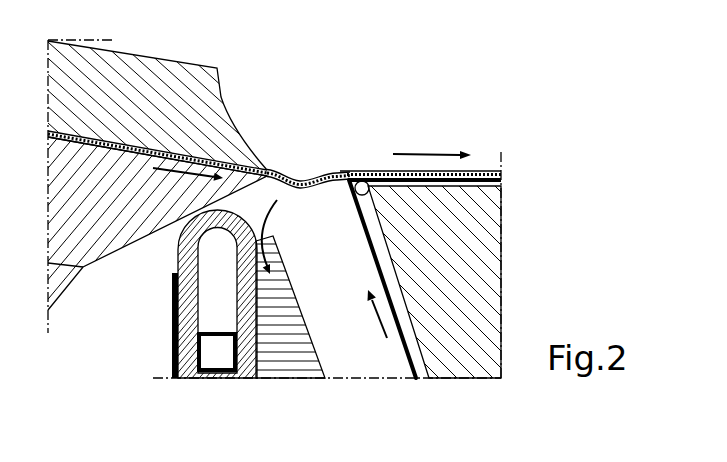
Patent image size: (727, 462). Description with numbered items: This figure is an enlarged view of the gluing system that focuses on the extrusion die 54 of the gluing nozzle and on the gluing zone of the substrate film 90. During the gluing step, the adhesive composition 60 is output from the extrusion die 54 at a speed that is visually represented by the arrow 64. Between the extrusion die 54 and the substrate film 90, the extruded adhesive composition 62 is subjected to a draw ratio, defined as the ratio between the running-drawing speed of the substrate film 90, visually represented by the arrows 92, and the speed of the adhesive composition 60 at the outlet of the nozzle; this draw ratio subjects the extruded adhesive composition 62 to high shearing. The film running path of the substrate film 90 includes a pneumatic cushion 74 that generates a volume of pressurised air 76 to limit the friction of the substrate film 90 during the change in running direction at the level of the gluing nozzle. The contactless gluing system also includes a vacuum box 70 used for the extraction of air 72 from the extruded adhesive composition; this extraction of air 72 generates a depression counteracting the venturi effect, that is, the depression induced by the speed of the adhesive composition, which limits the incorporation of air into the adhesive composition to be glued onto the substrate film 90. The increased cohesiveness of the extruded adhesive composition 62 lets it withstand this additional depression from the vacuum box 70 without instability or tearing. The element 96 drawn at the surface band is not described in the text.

The extrusion die 54 is at (238, 56).
The adhesive composition 60 is at (197, 155).
The extruded adhesive composition 62 is at (300, 176).
The arrow 64 is at (178, 185).
The vacuum box 70 is at (287, 362).
The air 72 is at (280, 212).
The pneumatic cushion 74 is at (478, 254).
The volume of pressurised air 76 is at (357, 183).
The substrate film 90 is at (406, 349).
The arrows 92 is at (423, 152).
The surface band 96 is at (485, 170).